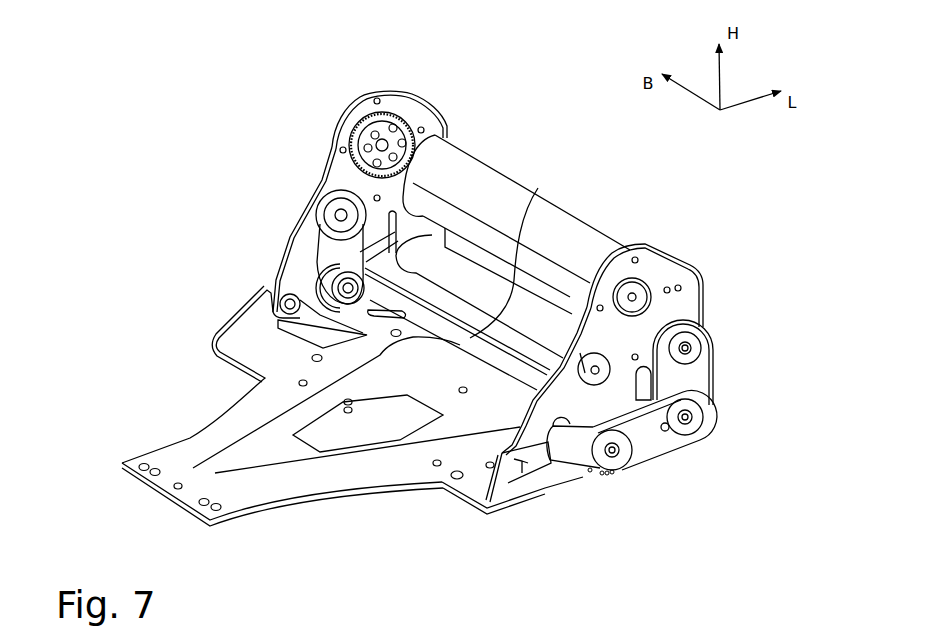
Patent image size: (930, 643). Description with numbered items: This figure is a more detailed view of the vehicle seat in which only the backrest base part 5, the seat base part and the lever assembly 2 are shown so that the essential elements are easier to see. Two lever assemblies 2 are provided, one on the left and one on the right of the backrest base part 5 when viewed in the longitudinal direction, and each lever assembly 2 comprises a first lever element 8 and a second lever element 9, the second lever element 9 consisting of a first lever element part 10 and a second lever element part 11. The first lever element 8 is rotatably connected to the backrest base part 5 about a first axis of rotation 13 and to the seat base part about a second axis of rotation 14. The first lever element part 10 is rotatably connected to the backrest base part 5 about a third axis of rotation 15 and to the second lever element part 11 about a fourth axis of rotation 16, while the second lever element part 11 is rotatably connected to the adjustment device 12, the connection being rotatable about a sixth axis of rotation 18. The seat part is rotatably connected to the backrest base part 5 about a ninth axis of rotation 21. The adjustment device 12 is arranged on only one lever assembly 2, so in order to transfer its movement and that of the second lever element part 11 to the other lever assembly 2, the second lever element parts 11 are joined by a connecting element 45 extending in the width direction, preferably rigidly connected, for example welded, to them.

The lever assembly 2 is at (235, 165).
The backrest base part 5 is at (354, 118).
The first lever element 8 is at (698, 372).
The second lever element 9 is at (208, 237).
The first lever element part 10 is at (348, 216).
The second lever element part 11 is at (310, 273).
The adjustment device 12 is at (580, 508).
The first axis of rotation 13 is at (698, 360).
The second axis of rotation 14 is at (708, 432).
The third axis of rotation 15 is at (308, 195).
The fourth axis of rotation 16 is at (277, 243).
The sixth axis of rotation 18 is at (637, 459).
The ninth axis of rotation 21 is at (263, 290).
The connecting element 45 is at (538, 188).